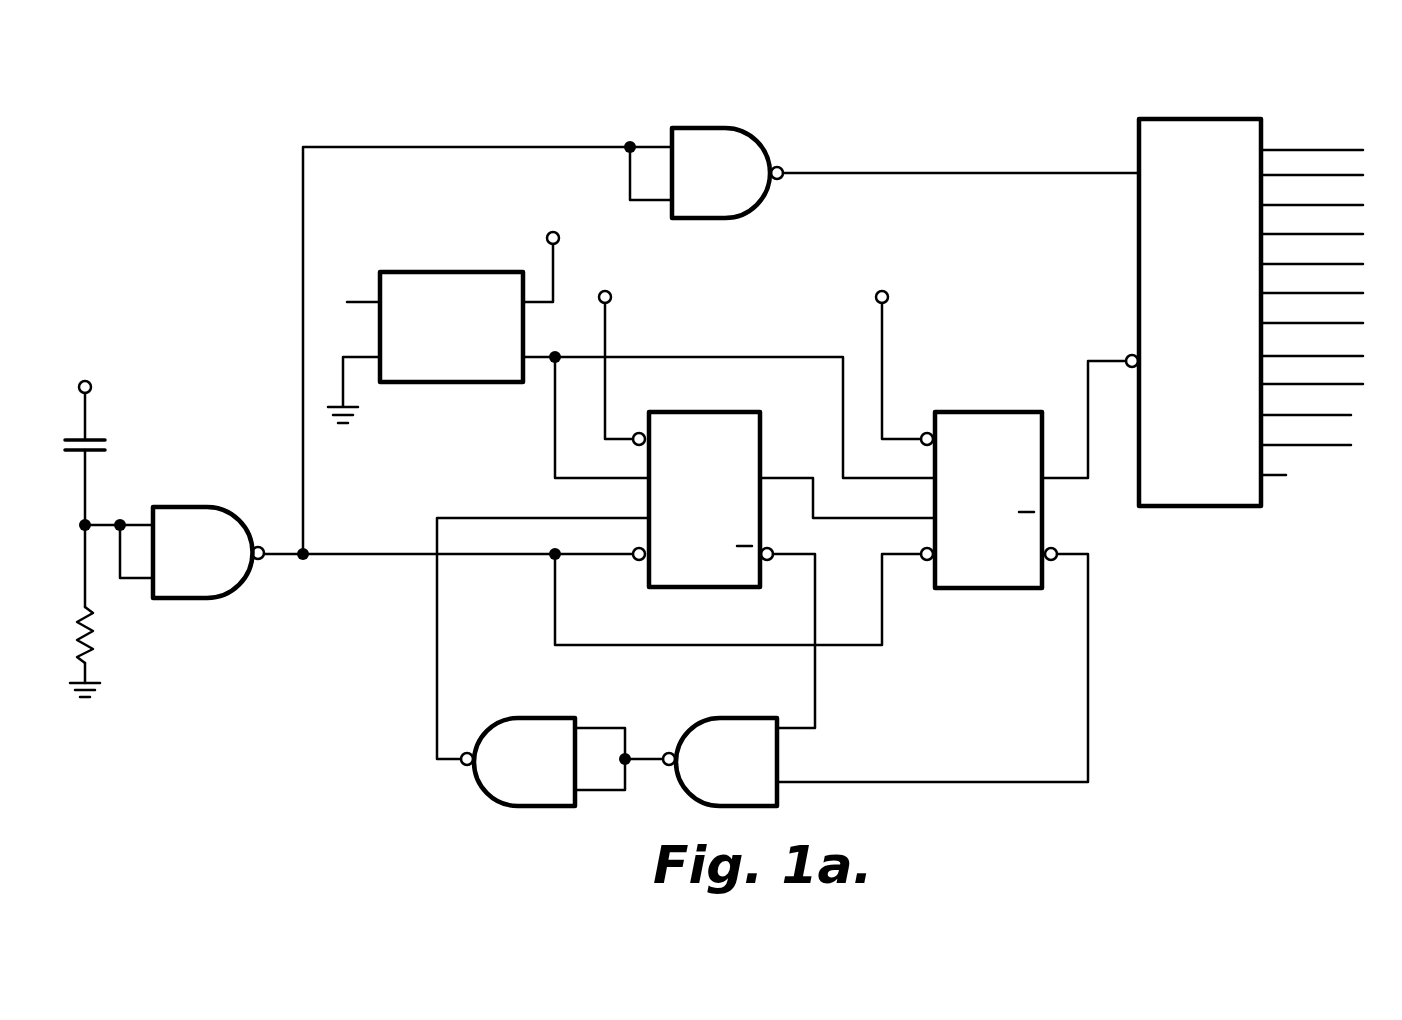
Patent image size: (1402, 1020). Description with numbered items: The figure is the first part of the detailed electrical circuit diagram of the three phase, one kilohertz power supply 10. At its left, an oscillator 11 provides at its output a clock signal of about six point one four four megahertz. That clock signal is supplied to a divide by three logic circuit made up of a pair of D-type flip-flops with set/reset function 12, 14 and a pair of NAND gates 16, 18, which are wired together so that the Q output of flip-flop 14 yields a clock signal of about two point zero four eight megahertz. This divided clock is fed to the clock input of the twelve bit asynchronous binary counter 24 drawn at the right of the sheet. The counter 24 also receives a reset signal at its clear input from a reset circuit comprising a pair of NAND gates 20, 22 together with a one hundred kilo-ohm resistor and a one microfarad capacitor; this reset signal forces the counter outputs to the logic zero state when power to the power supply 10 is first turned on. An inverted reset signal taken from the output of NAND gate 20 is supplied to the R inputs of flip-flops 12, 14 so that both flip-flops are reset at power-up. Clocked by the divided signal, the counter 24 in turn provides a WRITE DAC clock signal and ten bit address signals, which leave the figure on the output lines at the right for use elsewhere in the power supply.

The three phase, 1 KHz power supply 10 is at (418, 116).
The oscillator 11 is at (456, 272).
The D-type Flip-Flop with set/reset function 12 is at (712, 412).
The D-type Flip-Flop with set/reset function 14 is at (985, 412).
The NAND gate 16 is at (732, 718).
The NAND gate 18 is at (528, 718).
The NAND gate 20 is at (188, 507).
The NAND gate 22 is at (760, 138).
The 12 Bit Asynchronous Binary Counter 24 is at (1193, 119).